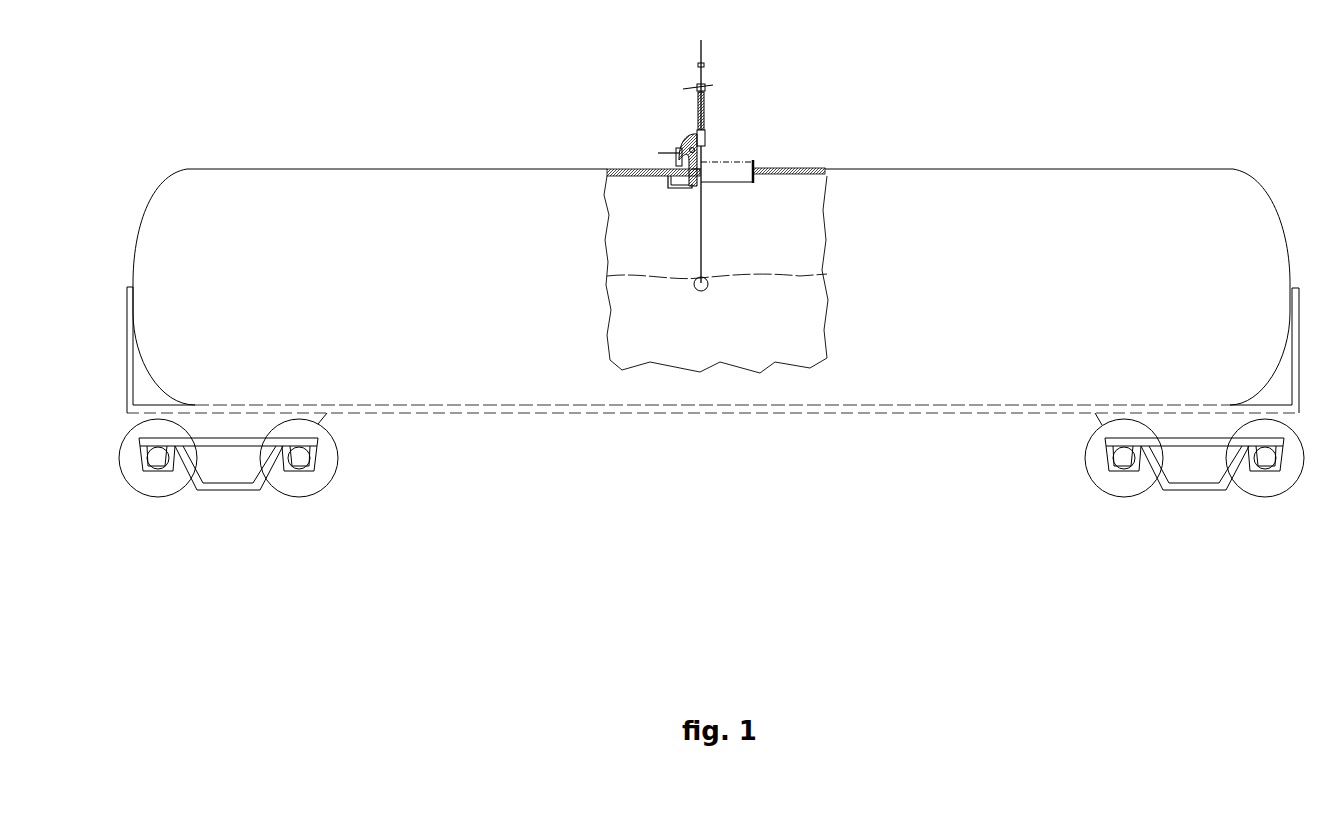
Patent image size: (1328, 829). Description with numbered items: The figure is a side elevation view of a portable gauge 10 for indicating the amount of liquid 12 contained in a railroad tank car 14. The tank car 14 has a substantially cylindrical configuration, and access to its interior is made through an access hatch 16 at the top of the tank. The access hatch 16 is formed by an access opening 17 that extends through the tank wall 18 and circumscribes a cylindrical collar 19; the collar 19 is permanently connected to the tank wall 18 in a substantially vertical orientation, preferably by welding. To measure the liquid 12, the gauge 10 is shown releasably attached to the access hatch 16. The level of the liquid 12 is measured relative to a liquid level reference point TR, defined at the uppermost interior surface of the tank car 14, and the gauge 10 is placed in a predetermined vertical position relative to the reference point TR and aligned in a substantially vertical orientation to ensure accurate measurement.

The liquid level reference point TR is at (637, 170).
The portable gauge 10 is at (705, 107).
The liquid 12 is at (720, 332).
The railroad tank car 14 is at (1107, 169).
The access hatch 16 is at (740, 160).
The access opening 17 is at (754, 174).
The tank wall 18 is at (813, 168).
The cylindrical collar 19 is at (683, 178).